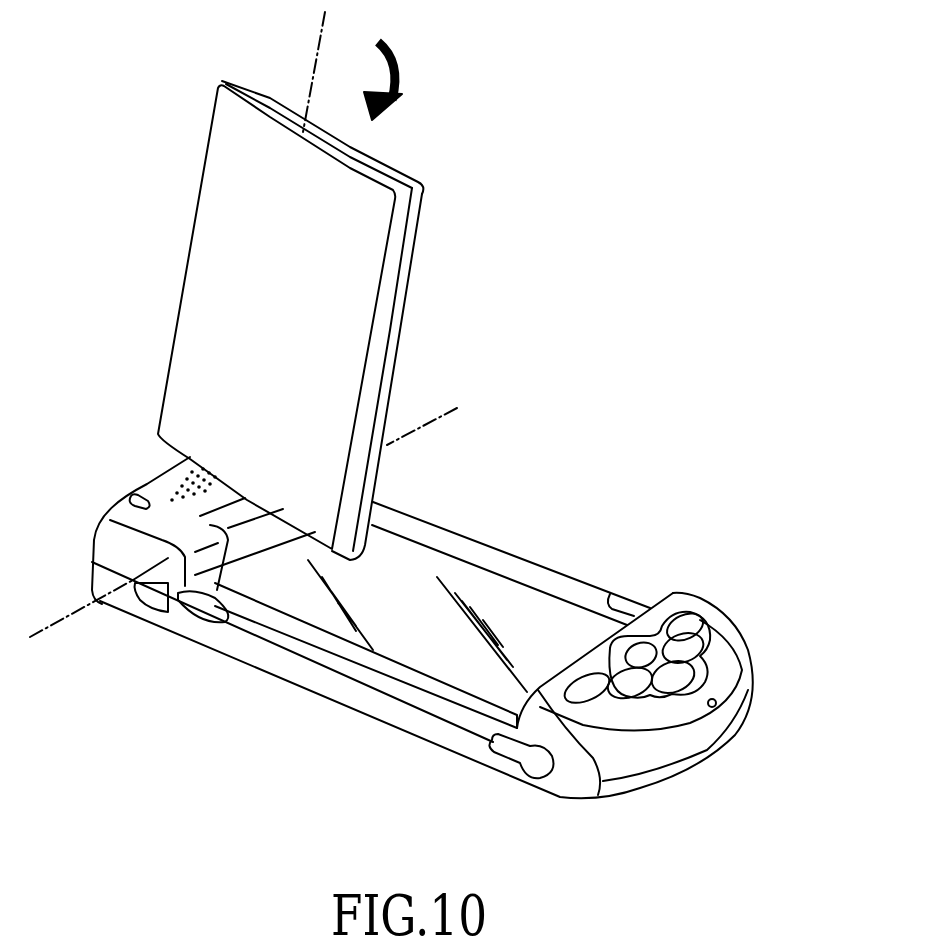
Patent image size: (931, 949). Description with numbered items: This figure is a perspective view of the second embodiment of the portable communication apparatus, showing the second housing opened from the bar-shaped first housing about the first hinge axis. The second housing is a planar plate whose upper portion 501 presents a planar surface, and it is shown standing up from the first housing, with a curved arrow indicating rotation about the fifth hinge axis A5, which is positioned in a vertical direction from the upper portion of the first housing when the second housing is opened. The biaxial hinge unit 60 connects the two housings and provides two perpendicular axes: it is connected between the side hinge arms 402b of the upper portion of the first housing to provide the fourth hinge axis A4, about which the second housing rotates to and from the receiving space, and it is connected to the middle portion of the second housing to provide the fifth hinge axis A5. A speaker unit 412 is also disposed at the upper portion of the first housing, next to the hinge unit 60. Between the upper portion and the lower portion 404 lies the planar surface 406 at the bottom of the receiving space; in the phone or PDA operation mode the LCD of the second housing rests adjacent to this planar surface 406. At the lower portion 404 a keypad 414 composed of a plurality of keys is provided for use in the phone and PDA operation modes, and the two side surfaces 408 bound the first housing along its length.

The upper portion 501 is at (215, 157).
The fifth hinge axis A5 is at (313, 60).
The fourth hinge axis A4 is at (452, 410).
The speaker unit 412 is at (163, 495).
The planar surface 406 is at (513, 600).
The keypad 414 is at (683, 650).
The lower portion 404 is at (724, 670).
The side hinge arms 402b is at (198, 577).
The biaxial hinge unit 60 is at (248, 530).
The side surfaces 408 is at (403, 714).